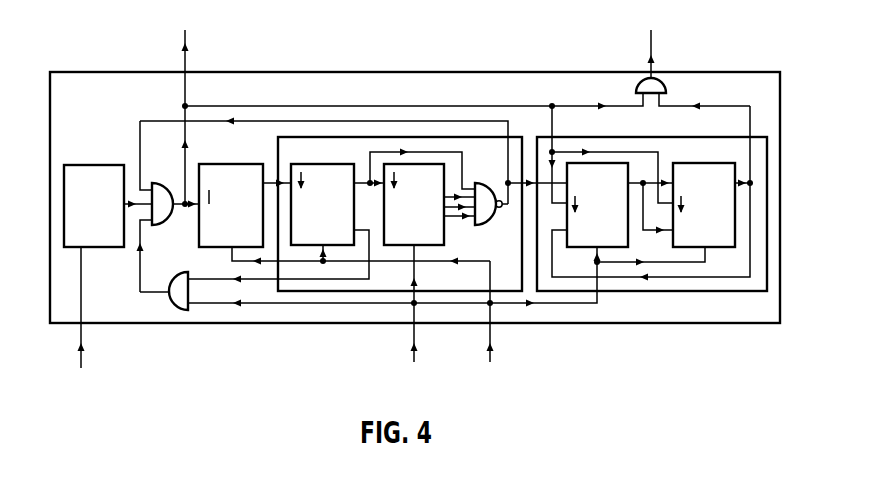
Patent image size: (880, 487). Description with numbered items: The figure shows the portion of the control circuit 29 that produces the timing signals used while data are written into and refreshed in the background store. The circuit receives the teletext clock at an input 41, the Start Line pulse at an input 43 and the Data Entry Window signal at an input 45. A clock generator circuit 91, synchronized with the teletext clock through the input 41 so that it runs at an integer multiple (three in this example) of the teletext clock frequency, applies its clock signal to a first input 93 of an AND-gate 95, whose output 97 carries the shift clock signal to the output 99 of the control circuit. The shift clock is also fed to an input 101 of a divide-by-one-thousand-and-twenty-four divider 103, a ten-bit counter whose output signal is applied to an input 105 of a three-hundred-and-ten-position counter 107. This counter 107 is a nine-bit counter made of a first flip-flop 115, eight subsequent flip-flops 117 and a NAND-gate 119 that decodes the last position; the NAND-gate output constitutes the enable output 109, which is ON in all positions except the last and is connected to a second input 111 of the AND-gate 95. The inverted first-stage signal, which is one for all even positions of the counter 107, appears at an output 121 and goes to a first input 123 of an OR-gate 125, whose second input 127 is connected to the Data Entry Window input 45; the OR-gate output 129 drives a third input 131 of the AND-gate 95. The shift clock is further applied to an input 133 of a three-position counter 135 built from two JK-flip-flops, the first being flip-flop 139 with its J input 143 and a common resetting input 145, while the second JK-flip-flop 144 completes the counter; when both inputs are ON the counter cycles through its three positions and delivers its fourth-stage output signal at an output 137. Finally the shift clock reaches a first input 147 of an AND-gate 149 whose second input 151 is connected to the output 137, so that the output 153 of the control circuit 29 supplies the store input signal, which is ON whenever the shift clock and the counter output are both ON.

The control circuit 29 is at (268, 324).
The TCLK input 41 is at (80, 327).
The SR input 43 is at (485, 333).
The DEW' input 45 is at (409, 333).
The clock generator circuit 91 is at (100, 165).
The first input of AND-gate 93 is at (141, 216).
The AND-gate 95 is at (163, 222).
The output of AND-gate 97 is at (176, 192).
The SC output 99 is at (188, 78).
The input of divide-by-1024 divider 101 is at (179, 208).
The divide-by-1024 divider 103 is at (226, 164).
The input of 310-position counter 105 is at (274, 166).
The 310-position counter 107 is at (333, 137).
The ER' output 109 is at (509, 132).
The second input of AND-gate 111 is at (143, 185).
The first flip-flop 115 is at (331, 164).
The eight subsequent flip-flops 117 is at (445, 238).
The NAND-gate 119 is at (482, 221).
The Q1' output 121 is at (276, 282).
The first input of OR-gate 123 is at (189, 279).
The OR-gate 125 is at (181, 305).
The second input of OR-gate 127 is at (190, 291).
The output of OR-gate 129 is at (172, 294).
The third input of AND-gate 131 is at (149, 214).
The input of three-position counter 133 is at (554, 137).
The three-position counter 135 is at (604, 137).
The Q4 output 137 is at (750, 136).
The first JK-flip-flop 139 is at (605, 164).
The J3 input 143 is at (527, 178).
The JK flip-flop J4/K4 144 is at (712, 163).
The resetting input 145 is at (597, 292).
The first input of AND-gate 147 is at (651, 96).
The AND-gate 149 is at (635, 89).
The second input of AND-gate 151 is at (667, 91).
The SI output 153 is at (654, 74).